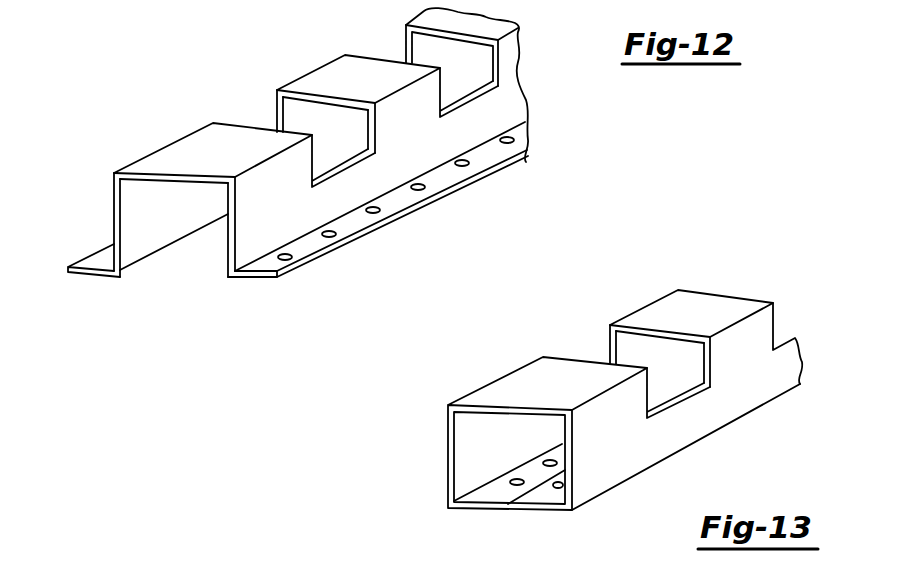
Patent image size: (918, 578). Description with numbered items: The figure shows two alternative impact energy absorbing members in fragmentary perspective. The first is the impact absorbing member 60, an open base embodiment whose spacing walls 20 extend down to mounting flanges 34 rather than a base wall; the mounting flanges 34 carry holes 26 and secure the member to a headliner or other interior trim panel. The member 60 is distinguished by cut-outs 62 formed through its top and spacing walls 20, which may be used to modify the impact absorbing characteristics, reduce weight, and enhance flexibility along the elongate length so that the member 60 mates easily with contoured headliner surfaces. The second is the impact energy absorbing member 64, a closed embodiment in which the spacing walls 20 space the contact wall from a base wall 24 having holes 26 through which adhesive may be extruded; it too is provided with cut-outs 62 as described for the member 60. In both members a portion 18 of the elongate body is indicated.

In FIG. 12, the tubular frame member segment 18 is at (196, 143).
In FIG. 13, the tubular frame member segment 18 is at (662, 312).
In FIG. 12, the spacing walls 20 is at (131, 192).
In FIG. 13, the spacing walls 20 is at (477, 421).
In FIG. 13, the base wall 24 is at (542, 493).
In FIG. 12, the holes 26 is at (438, 180).
In FIG. 13, the holes 26 is at (513, 479).
In FIG. 12, the mounting flanges 34 is at (94, 249).
In FIG. 12, the impact absorbing member 60 is at (313, 72).
In FIG. 12, the cut-outs 62 is at (363, 133).
In FIG. 13, the cut-outs 62 is at (688, 343).
In FIG. 13, the impact energy absorbing member 64 is at (545, 376).